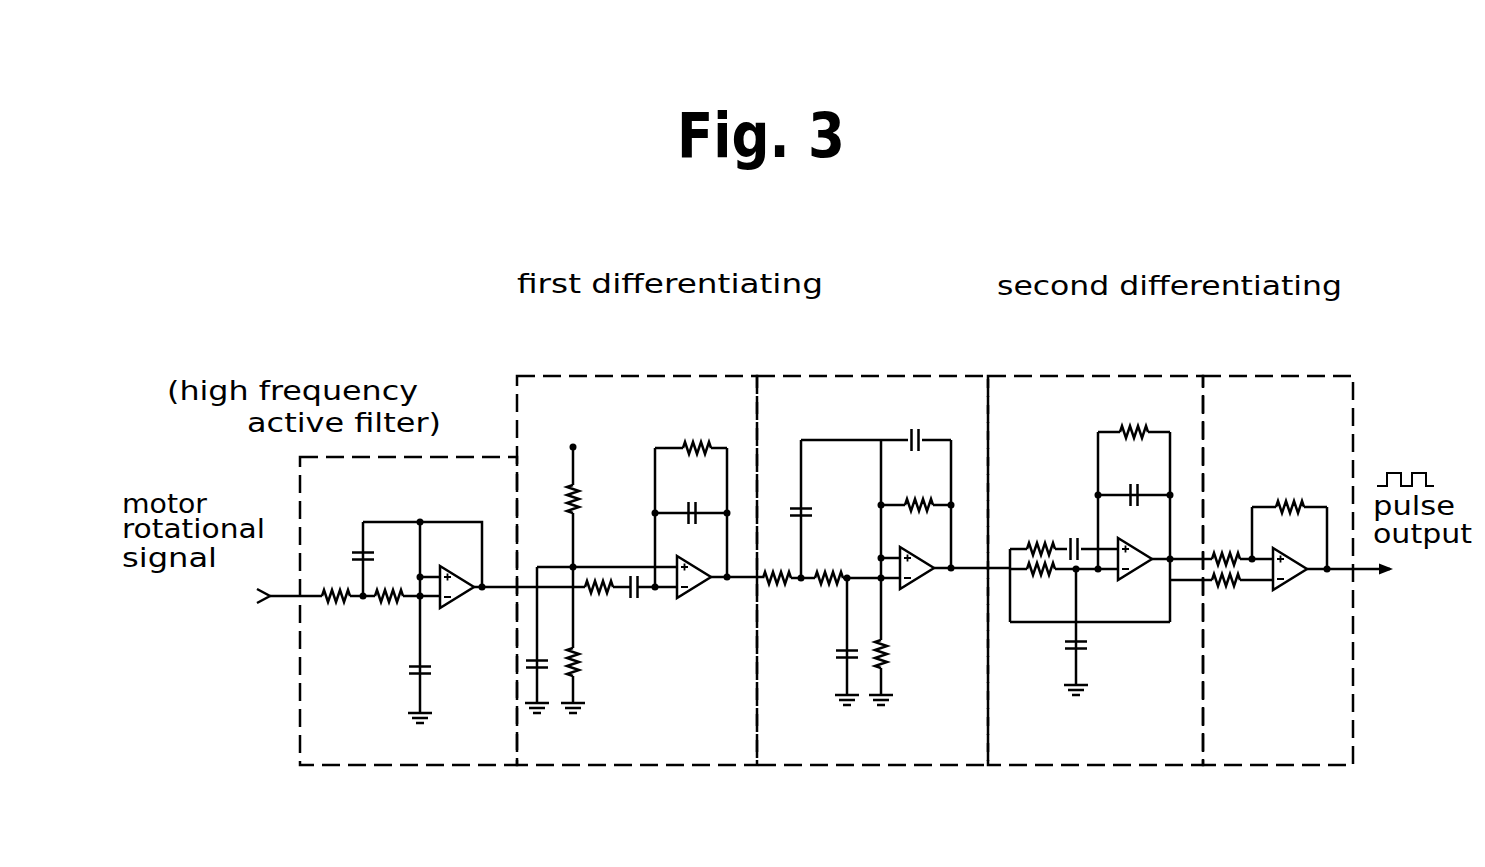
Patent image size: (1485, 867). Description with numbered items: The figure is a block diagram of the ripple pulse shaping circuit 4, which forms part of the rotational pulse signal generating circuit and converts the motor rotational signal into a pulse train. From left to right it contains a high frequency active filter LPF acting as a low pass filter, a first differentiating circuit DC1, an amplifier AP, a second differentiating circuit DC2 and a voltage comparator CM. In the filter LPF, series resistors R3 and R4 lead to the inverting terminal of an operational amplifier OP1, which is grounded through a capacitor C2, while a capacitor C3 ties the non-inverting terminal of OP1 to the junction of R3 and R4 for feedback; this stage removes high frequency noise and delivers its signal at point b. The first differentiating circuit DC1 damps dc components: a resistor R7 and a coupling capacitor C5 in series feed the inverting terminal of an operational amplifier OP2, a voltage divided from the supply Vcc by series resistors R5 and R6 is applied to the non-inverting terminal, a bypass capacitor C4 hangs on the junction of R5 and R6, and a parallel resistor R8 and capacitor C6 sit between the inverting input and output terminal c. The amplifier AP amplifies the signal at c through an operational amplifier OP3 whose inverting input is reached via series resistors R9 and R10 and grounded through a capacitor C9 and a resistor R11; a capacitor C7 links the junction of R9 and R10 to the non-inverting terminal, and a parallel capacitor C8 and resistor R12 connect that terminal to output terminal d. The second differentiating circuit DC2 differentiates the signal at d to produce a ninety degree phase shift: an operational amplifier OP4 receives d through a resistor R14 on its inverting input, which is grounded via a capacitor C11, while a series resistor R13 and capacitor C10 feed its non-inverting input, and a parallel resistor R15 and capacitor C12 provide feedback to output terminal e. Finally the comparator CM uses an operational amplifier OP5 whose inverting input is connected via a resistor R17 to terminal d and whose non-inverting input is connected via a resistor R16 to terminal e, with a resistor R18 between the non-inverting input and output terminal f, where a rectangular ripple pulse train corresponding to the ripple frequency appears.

The ripple pulse shaping circuit 4 is at (797, 579).
The high frequency active filter (low pass filter) LPF is at (342, 537).
The first differentiating circuit DC1 is at (637, 549).
The amplifier AP is at (872, 549).
The second differentiating circuit DC2 is at (1095, 550).
The voltage comparator CM is at (1315, 550).
The resistor R3 is at (335, 581).
The resistor R4 is at (386, 610).
The capacitor C3 is at (378, 559).
The capacitor C2 is at (434, 659).
The operational amplifier OP1 is at (466, 600).
The output terminal b is at (529, 570).
The resistor R5 is at (552, 523).
The resistor R6 is at (587, 640).
The resistor R7 is at (597, 607).
The resistor R8 is at (691, 435).
The bypass capacitor C4 is at (543, 670).
The coupling capacitor C5 is at (645, 604).
The capacitor C6 is at (691, 500).
The supply voltage Vcc is at (574, 453).
The operational amplifier OP2 is at (707, 588).
The output terminal c is at (737, 561).
The resistor R9 is at (776, 563).
The resistor R10 is at (833, 563).
The resistor R11 is at (903, 641).
The resistor R12 is at (916, 491).
The capacitor C7 is at (816, 509).
The capacitor C8 is at (876, 428).
The capacitor C9 is at (829, 641).
The operational amplifier OP3 is at (925, 581).
The output terminal d is at (972, 552).
The resistor R13 is at (1033, 536).
The resistor R14 is at (1038, 588).
The resistor R15 is at (1134, 418).
The capacitor C10 is at (1073, 536).
The capacitor C11 is at (1097, 632).
The capacitor C12 is at (1134, 482).
The operational amplifier OP4 is at (1128, 577).
The output terminal e is at (1182, 543).
The resistor R16 is at (1231, 546).
The resistor R17 is at (1231, 593).
The resistor R18 is at (1289, 522).
The operational amplifier OP5 is at (1301, 583).
The output terminal f is at (1370, 528).